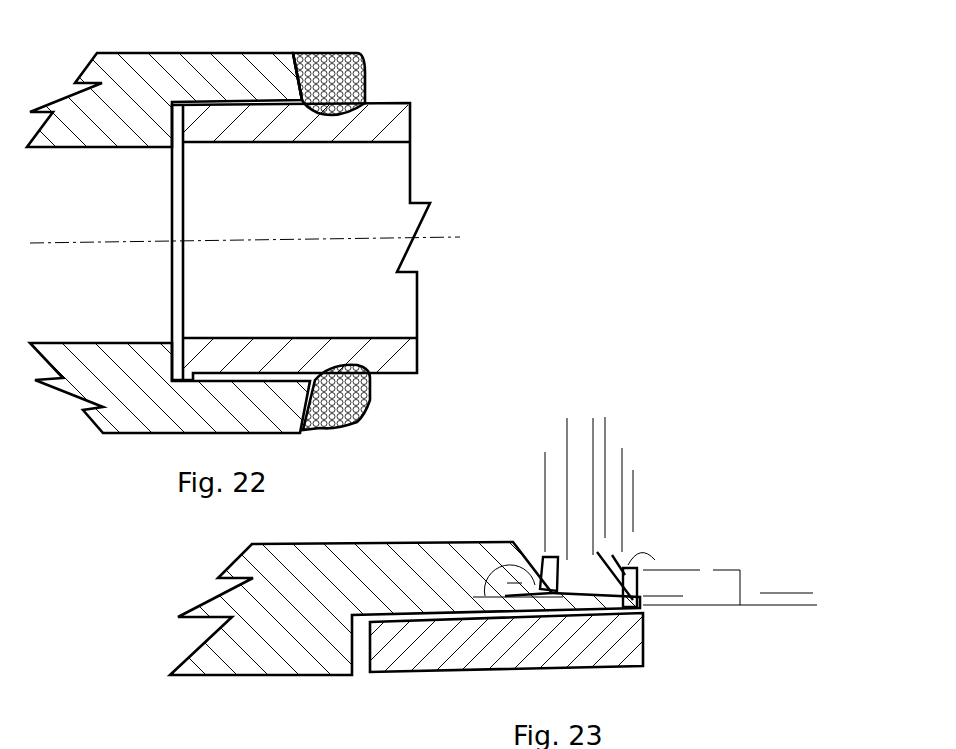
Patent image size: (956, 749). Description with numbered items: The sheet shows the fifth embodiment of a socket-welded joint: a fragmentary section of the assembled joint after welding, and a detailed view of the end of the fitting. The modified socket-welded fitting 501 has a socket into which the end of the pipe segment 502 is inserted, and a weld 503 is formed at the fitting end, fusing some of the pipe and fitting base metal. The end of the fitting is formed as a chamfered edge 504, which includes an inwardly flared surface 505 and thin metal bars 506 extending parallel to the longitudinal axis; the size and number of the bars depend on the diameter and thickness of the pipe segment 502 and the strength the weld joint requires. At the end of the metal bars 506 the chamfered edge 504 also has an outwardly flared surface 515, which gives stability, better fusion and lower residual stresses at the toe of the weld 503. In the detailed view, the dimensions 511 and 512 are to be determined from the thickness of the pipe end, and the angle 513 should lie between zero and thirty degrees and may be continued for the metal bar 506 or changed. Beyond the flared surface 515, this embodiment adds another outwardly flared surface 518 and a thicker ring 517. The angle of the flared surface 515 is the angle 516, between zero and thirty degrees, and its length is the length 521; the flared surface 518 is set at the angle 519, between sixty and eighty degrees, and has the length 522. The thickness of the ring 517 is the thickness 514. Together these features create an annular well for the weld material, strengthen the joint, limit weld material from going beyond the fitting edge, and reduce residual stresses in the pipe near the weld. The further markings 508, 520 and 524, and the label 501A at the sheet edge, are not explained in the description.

In FIG. 22, the modified socket-welded fitting 501 is at (137, 67).
In FIG. 23, the modified socket-welded fitting 501 is at (281, 553).
In FIG. 22, the pipe segment 502 is at (400, 122).
In FIG. 23, the pipe segment 502 is at (387, 663).
In FIG. 22, the weld 503 is at (332, 60).
In FIG. 22, the chamfered edge 504 is at (299, 43).
In FIG. 23, the chamfered edge 504 is at (532, 553).
In FIG. 23, the inwardly flared surface 505 is at (547, 553).
In FIG. 23, the thin metal bars 506 is at (578, 618).
In FIG. 23, the chamfered edge 508 is at (510, 568).
In FIG. 23, the dimension 511 is at (567, 470).
In FIG. 23, the dimension 512 is at (790, 593).
In FIG. 23, the angle 513 is at (480, 592).
In FIG. 23, the thickness of the ring 514 is at (740, 570).
In FIG. 23, the outwardly flared surface 515 is at (587, 575).
In FIG. 23, the angle of the flared surface 516 is at (668, 581).
In FIG. 23, the thicker ring 517 is at (643, 600).
In FIG. 23, the outwardly flared surface 518 is at (633, 633).
In FIG. 23, the angle 519 is at (653, 550).
In FIG. 23, the width dimension 520 is at (593, 422).
In FIG. 23, the length of flared surface 521 is at (593, 430).
In FIG. 23, the length of flared surface 522 is at (605, 450).
In FIG. 23, the width dimension 524 is at (622, 477).
In FIG. 23, the housing body (other figure) 501A is at (145, 748).